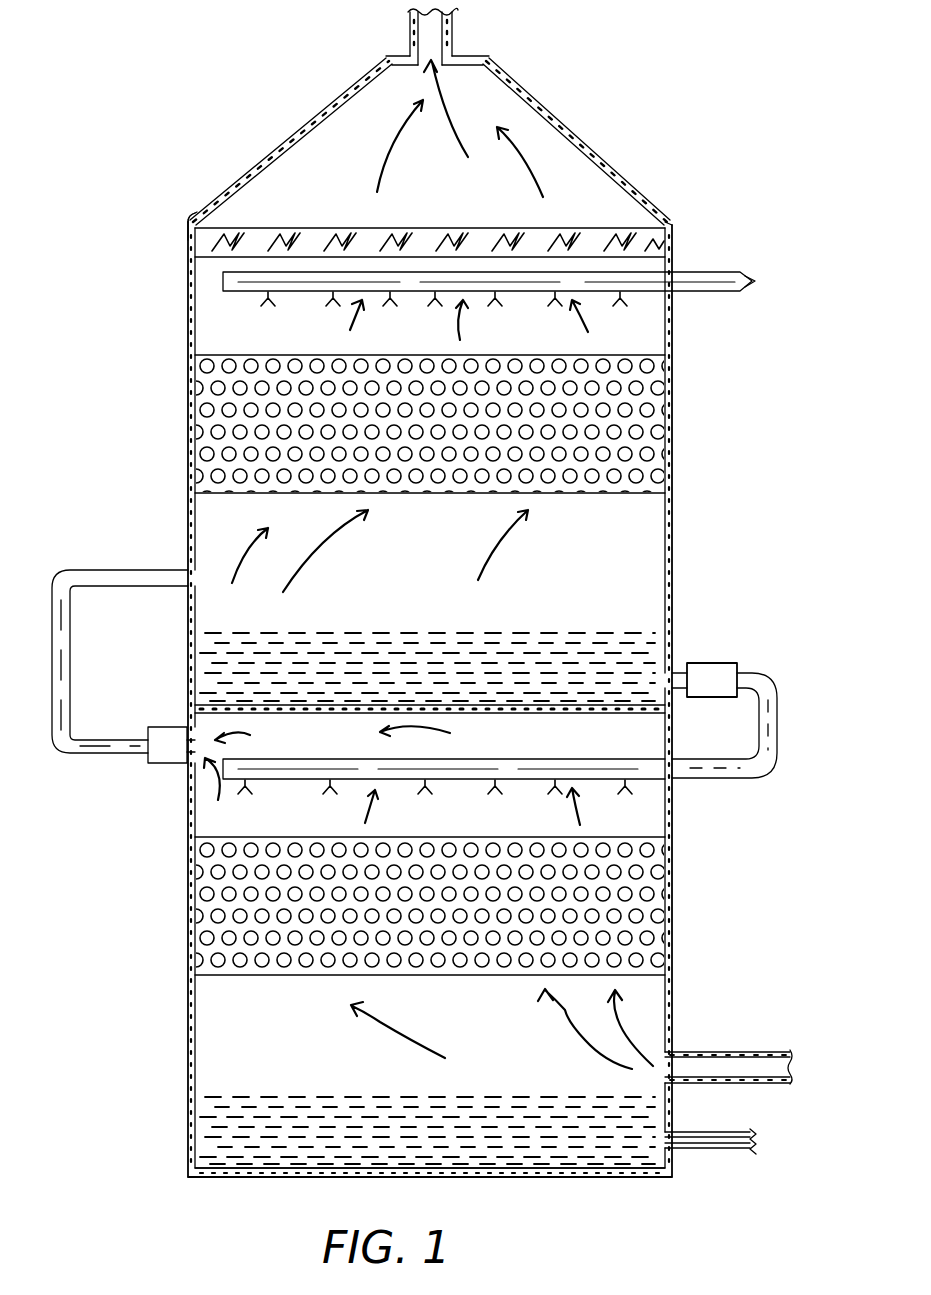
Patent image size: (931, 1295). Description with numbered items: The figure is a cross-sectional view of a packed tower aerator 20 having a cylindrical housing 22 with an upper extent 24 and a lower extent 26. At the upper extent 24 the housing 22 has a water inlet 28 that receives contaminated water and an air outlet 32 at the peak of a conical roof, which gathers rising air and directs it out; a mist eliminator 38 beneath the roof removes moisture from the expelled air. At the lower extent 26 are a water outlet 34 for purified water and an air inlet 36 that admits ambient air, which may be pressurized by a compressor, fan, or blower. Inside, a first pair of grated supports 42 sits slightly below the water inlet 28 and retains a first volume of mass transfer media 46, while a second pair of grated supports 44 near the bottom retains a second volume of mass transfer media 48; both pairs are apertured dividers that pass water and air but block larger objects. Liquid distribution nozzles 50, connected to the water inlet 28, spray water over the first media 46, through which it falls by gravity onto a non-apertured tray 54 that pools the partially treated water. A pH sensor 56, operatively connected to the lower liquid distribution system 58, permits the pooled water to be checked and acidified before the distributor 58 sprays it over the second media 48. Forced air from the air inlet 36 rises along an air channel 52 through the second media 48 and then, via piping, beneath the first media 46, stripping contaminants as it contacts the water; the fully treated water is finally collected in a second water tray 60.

The packed tower aerator 20 is at (655, 160).
The housing 22 is at (580, 140).
The upper extent 24 is at (195, 218).
The lower extent 26 is at (188, 1150).
The water inlet 28 is at (745, 291).
The air outlet 32 is at (455, 40).
The water outlet 34 is at (672, 1150).
The air inlet 36 is at (700, 1058).
The mist eliminator 38 is at (665, 228).
The first pair of grated supports 42 is at (200, 355).
The second pair of grated supports 44 is at (205, 837).
The first volume of mass transfer media 46 is at (215, 432).
The second volume of mass transfer media 48 is at (215, 920).
The liquid distribution nozzles 50 is at (630, 300).
The air channel 52 is at (265, 203).
The tray 54 is at (590, 700).
The pH sensor 56 is at (717, 670).
The liquid distribution system 58 is at (625, 780).
The second water tray 60 is at (520, 1177).